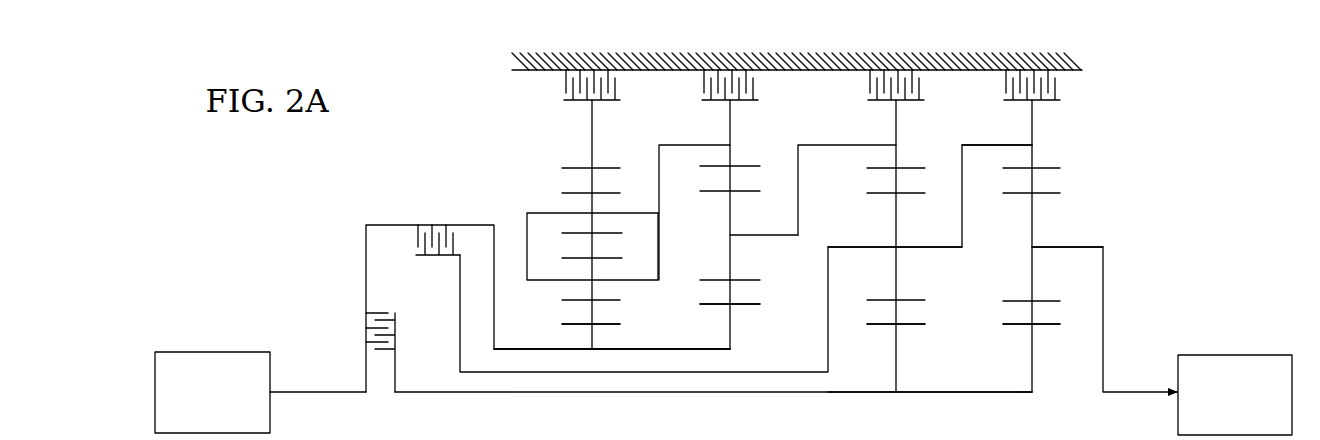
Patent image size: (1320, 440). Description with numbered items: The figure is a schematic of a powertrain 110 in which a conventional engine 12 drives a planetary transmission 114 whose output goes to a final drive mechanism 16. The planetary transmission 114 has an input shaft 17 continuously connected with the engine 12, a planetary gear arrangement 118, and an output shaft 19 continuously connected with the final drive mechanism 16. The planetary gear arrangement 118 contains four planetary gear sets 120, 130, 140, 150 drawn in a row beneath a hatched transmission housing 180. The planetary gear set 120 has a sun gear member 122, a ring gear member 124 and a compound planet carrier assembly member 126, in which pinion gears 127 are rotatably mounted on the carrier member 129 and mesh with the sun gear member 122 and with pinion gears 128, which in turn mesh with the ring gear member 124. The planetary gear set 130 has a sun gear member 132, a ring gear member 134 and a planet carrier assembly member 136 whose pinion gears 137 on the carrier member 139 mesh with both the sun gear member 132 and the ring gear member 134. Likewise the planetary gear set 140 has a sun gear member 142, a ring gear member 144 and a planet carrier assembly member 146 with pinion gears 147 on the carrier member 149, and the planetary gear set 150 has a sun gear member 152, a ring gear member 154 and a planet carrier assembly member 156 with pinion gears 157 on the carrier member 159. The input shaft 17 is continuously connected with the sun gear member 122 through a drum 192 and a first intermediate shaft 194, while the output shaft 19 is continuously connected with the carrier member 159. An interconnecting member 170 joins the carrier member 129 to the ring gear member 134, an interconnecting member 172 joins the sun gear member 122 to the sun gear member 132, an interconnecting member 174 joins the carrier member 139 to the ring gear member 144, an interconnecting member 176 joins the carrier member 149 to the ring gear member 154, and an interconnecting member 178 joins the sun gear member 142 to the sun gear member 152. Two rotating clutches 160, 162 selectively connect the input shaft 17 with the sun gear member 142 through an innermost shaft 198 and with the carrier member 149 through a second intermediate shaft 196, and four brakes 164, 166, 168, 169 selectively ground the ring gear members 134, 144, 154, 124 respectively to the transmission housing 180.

The engine 12 is at (220, 340).
The final drive mechanism 16 is at (1227, 342).
The input shaft 17 is at (317, 392).
The output shaft 19 is at (1142, 392).
The powertrain 110 is at (450, 158).
The planetary transmission 114 is at (480, 123).
The planetary gear arrangement 118 is at (512, 95).
The planetary gear set 120 is at (602, 340).
The sun gear member 122 is at (608, 327).
The ring gear member 124 is at (610, 167).
The planet carrier assembly member 126 is at (670, 233).
The pinion gears 127 is at (590, 288).
The pinion gears 128 is at (590, 199).
The carrier member 129 is at (527, 216).
The planetary gear set 130 is at (745, 315).
The sun gear member 132 is at (752, 307).
The ring gear member 134 is at (748, 166).
The planet carrier assembly member 136 is at (717, 220).
The pinion gears 137 is at (730, 262).
The carrier member 139 is at (768, 235).
The planetary gear set 140 is at (910, 333).
The sun gear member 142 is at (907, 325).
The ring gear member 144 is at (912, 167).
The planet carrier assembly member 146 is at (863, 227).
The pinion gears 147 is at (896, 280).
The carrier member 149 is at (923, 247).
The planetary gear set 150 is at (1042, 333).
The sun gear member 152 is at (1048, 327).
The ring gear member 154 is at (1050, 167).
The planet carrier assembly member 156 is at (1022, 235).
The pinion gears 157 is at (1032, 280).
The carrier member 159 is at (1077, 247).
The clutch 160 is at (388, 308).
The clutch 162 is at (410, 237).
The brake 164 is at (697, 85).
The brake 166 is at (930, 85).
The brake 168 is at (1062, 85).
The brake 169 is at (557, 85).
The interconnecting member 170 is at (678, 145).
The interconnecting member 172 is at (722, 349).
The interconnecting member 174 is at (800, 174).
The interconnecting member 176 is at (982, 145).
The interconnecting member 178 is at (990, 392).
The transmission housing 180 is at (857, 55).
The drum 192 is at (366, 224).
The first intermediate shaft 194 is at (515, 349).
The second intermediate shaft 196 is at (552, 372).
The innermost shaft 198 is at (678, 392).